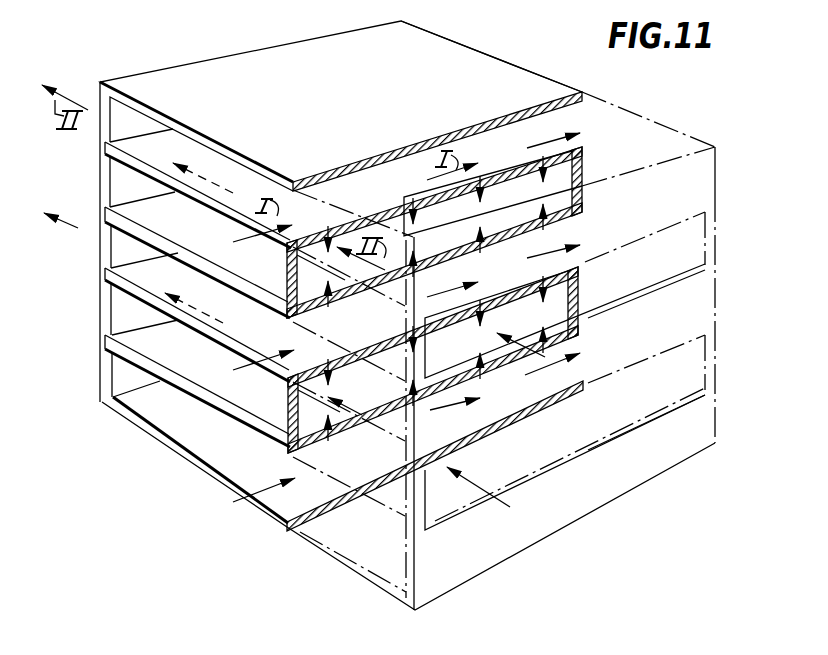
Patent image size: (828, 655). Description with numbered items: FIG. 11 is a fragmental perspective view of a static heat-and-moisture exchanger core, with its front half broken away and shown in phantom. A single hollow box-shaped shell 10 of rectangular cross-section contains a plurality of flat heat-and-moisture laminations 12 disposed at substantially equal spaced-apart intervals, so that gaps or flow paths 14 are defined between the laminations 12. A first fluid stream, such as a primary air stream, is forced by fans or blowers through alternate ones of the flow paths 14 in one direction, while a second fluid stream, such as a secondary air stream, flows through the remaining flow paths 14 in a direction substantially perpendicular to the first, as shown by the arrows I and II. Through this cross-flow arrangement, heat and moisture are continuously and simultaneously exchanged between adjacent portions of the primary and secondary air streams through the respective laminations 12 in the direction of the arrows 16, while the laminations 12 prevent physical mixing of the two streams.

The shell structure 10 is at (231, 36).
The heat-and-moisture transfer member 12 is at (140, 153).
The gaps or flow paths 14 is at (584, 163).
The arrows 16 is at (474, 197).